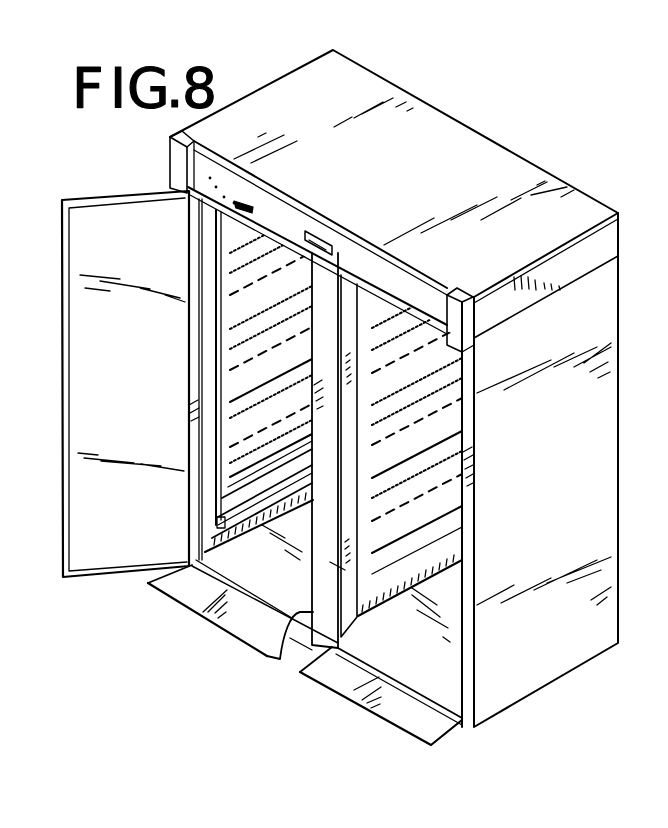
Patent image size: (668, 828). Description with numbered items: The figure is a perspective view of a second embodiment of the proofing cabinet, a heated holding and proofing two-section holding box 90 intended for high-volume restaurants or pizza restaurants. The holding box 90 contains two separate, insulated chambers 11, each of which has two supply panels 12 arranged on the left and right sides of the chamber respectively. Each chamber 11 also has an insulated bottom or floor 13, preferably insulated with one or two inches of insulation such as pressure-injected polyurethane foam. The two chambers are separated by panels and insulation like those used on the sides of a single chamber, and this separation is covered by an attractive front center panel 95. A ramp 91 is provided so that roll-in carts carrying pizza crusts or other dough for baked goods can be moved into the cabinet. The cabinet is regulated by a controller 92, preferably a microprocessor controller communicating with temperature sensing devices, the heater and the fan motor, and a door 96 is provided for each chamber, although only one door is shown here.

The two-section holding box 90 is at (543, 152).
The door 96 is at (110, 218).
The controller 92 is at (308, 233).
The supply panel 12 is at (231, 473).
The insulated chamber 11 is at (227, 557).
The floor 13 is at (280, 578).
The front center panel 95 is at (268, 656).
The ramp 91 is at (343, 677).